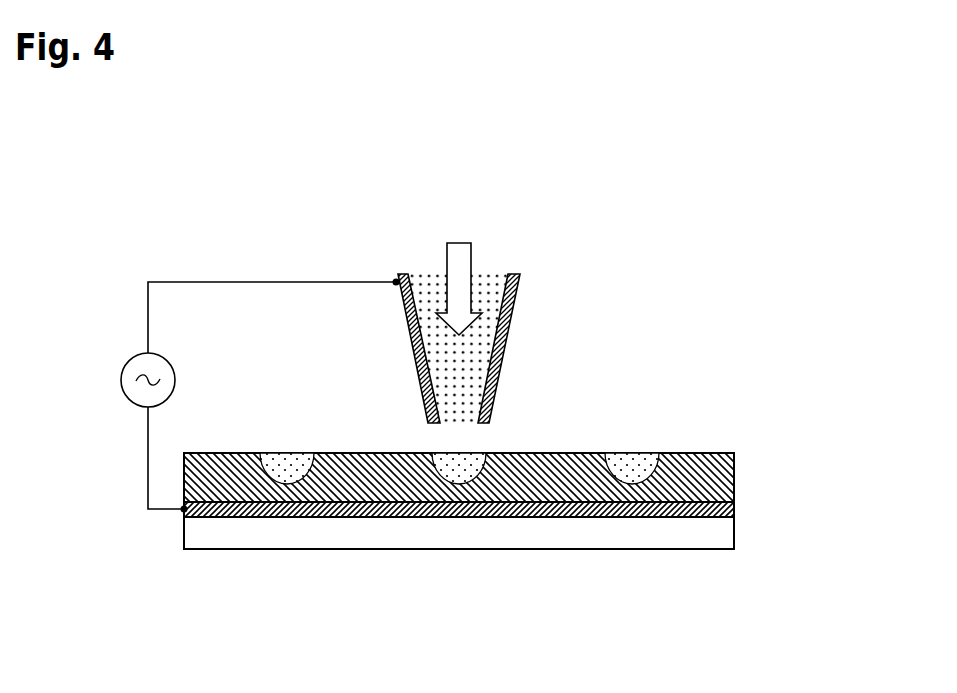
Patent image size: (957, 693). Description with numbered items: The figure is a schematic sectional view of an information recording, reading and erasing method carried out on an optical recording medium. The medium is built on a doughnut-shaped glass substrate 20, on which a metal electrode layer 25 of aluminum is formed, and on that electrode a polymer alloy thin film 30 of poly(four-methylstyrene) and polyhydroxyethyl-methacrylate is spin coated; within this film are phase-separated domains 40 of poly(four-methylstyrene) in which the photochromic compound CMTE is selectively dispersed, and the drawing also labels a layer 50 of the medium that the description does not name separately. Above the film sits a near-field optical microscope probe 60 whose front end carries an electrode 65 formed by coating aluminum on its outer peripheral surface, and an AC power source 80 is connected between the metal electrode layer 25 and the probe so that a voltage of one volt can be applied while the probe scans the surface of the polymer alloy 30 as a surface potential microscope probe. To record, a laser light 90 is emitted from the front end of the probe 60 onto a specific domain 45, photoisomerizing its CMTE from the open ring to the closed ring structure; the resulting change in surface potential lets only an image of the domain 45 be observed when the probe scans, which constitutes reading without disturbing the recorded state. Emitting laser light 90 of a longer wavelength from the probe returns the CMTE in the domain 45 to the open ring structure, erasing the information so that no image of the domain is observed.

The glass substrate 20 is at (585, 538).
The metal electrode layer 25 is at (702, 503).
The polymer alloy thin film 30 is at (551, 500).
The phase-separated domain 40 is at (272, 465).
The specific domain 45 is at (462, 462).
The insulating layer 50 is at (718, 455).
The near-field optical microscope probe 60 is at (477, 361).
The electrode 65 is at (418, 350).
The AC power source 80 is at (125, 398).
The laser light 90 is at (462, 252).